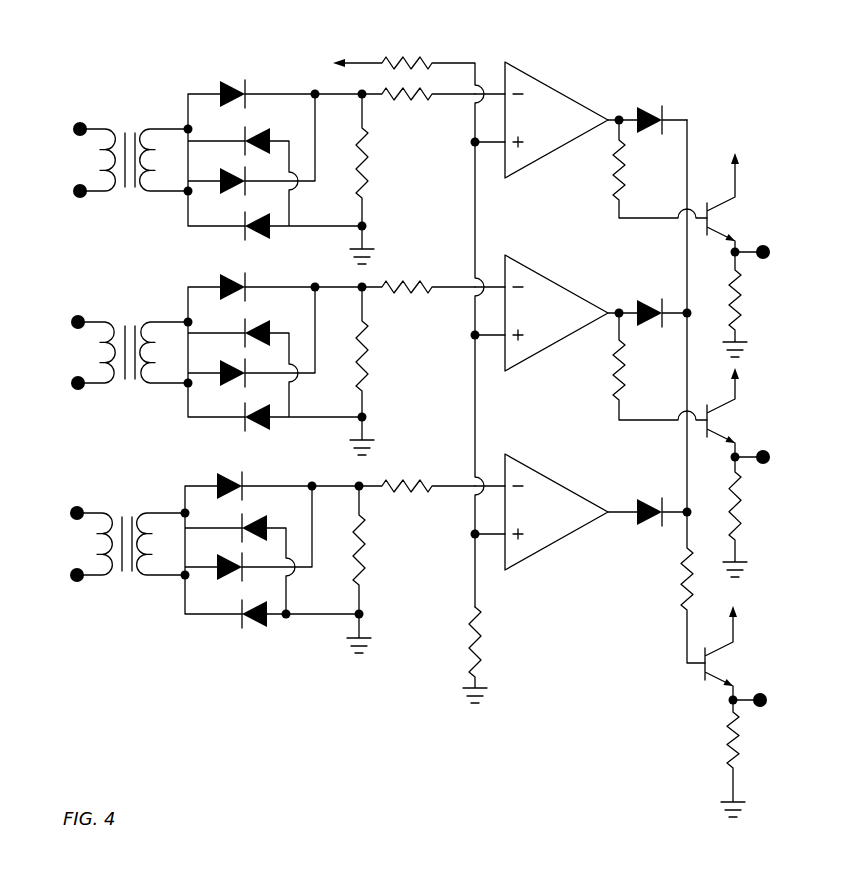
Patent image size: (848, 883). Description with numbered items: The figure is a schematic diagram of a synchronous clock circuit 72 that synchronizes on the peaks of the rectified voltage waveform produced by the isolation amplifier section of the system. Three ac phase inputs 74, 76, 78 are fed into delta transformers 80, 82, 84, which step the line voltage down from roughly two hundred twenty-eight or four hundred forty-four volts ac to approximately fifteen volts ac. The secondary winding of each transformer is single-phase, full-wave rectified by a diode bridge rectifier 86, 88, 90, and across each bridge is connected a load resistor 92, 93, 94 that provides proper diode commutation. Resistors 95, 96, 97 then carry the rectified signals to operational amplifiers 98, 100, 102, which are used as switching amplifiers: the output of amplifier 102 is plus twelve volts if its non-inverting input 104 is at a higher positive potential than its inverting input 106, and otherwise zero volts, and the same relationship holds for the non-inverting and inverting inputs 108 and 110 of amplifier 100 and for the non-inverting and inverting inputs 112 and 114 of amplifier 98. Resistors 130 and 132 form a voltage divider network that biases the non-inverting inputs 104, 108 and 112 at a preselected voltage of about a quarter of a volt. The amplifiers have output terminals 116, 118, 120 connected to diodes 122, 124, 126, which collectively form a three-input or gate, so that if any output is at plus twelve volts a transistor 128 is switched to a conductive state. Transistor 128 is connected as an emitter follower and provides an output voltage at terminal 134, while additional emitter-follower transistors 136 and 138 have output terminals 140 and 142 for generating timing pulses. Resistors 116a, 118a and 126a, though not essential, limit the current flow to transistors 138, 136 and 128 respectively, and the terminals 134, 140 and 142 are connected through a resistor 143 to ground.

The clock circuit 72 is at (525, 777).
The ac phase input 74 is at (79, 124).
The ac phase input 76 is at (77, 317).
The ac phase input 78 is at (76, 508).
The delta transformer 80 is at (125, 131).
The delta transformer 82 is at (129, 322).
The delta transformer 84 is at (128, 514).
The diode bridge rectifier 86 is at (212, 72).
The diode bridge rectifier 88 is at (212, 268).
The diode bridge rectifier 90 is at (211, 460).
The resistor 92 is at (371, 152).
The resistor 93 is at (371, 355).
The resistor 94 is at (367, 549).
The resistor 95 is at (400, 100).
The resistor 96 is at (400, 294).
The resistor 97 is at (400, 494).
The operational amplifier 98 is at (545, 78).
The operational amplifier 100 is at (545, 283).
The operational amplifier 102 is at (546, 470).
The non-inverting input 104 is at (503, 537).
The inverting input 106 is at (501, 486).
The non-inverting input 108 is at (503, 338).
The inverting input 110 is at (501, 287).
The non-inverting input 112 is at (504, 145).
The inverting input 114 is at (501, 94).
The output terminal 116 is at (617, 116).
The resistor 116a is at (618, 158).
The output terminal 118 is at (617, 311).
The resistor 118a is at (618, 365).
The output terminal 120 is at (623, 518).
The diode 122 is at (663, 110).
The diode 124 is at (660, 309).
The diode 126 is at (648, 503).
The resistor 126a is at (678, 598).
The transistor 128 is at (706, 680).
The resistor 130 is at (410, 58).
The resistor 132 is at (478, 641).
The output terminal 134 is at (738, 695).
The transistor 136 is at (705, 408).
The transistor 138 is at (705, 205).
The output terminal 140 is at (738, 452).
The output terminal 142 is at (738, 248).
The resistor 143 is at (745, 312).